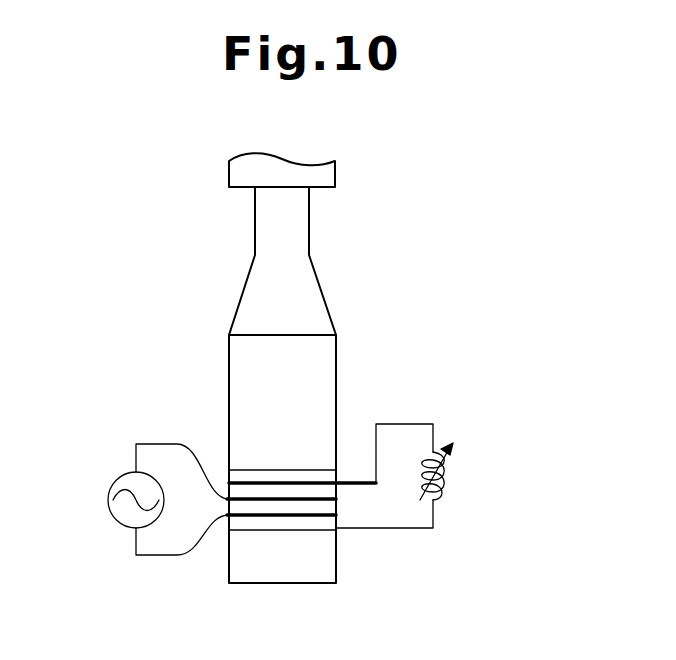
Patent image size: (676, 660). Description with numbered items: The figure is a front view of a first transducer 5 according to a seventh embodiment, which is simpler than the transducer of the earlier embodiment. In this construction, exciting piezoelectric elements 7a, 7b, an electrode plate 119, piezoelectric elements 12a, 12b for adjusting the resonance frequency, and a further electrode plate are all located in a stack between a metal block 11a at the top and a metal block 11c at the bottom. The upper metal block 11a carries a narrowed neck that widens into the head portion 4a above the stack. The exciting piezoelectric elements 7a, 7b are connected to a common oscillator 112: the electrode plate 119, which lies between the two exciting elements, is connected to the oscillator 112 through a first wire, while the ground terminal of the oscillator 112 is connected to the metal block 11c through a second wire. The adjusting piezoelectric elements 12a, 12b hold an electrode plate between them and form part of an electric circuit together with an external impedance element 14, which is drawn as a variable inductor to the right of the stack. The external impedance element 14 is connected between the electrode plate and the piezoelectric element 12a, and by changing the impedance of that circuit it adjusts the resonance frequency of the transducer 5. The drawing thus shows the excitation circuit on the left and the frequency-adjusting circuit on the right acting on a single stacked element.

The vibration plate / head portion 4a is at (332, 170).
The transducer 5 is at (215, 333).
The metal block 11a is at (332, 352).
The piezoelectric element 12a is at (322, 473).
The exciting piezoelectric element 7b is at (243, 492).
The electrode plate 119 is at (337, 499).
The exciting piezoelectric element 7a is at (253, 505).
The piezoelectric element 12b is at (323, 523).
The metal block 11c is at (288, 577).
The external impedance element 14 is at (447, 478).
The oscillator 112 is at (110, 524).